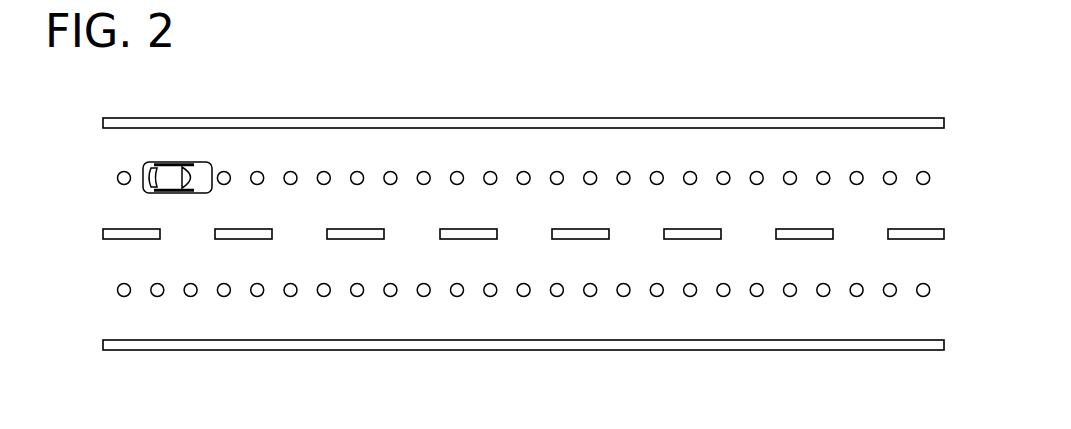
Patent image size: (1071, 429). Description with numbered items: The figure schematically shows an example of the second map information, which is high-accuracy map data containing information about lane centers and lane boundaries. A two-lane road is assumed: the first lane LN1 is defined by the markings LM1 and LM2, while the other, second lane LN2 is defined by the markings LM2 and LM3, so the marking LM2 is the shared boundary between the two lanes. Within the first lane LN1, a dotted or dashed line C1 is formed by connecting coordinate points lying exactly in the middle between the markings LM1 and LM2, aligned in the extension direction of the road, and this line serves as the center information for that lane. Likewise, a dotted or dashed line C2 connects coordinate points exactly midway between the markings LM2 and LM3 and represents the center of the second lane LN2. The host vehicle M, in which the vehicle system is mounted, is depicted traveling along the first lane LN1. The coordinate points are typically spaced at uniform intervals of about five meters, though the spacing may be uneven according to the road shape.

The host vehicle M is at (174, 162).
The first lane LN1 is at (98, 118).
The second lane LN2 is at (98, 233).
The marking LM1 is at (798, 118).
The marking LM2 is at (808, 228).
The marking LM3 is at (802, 351).
The dotted line or dashed line C1 is at (656, 171).
The dotted line or dashed line C2 is at (657, 297).